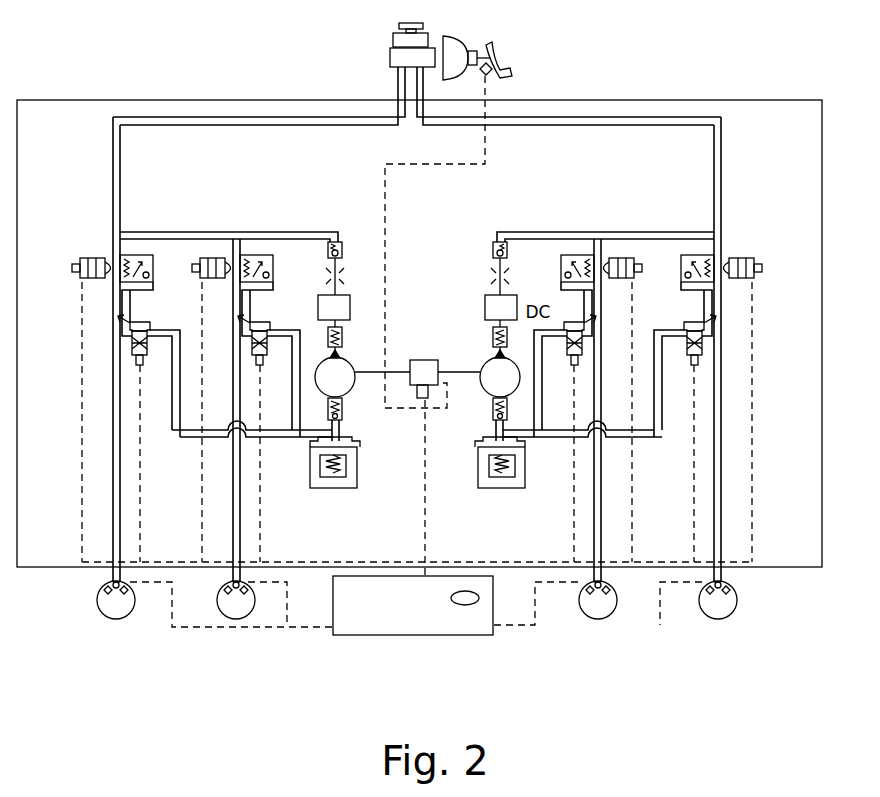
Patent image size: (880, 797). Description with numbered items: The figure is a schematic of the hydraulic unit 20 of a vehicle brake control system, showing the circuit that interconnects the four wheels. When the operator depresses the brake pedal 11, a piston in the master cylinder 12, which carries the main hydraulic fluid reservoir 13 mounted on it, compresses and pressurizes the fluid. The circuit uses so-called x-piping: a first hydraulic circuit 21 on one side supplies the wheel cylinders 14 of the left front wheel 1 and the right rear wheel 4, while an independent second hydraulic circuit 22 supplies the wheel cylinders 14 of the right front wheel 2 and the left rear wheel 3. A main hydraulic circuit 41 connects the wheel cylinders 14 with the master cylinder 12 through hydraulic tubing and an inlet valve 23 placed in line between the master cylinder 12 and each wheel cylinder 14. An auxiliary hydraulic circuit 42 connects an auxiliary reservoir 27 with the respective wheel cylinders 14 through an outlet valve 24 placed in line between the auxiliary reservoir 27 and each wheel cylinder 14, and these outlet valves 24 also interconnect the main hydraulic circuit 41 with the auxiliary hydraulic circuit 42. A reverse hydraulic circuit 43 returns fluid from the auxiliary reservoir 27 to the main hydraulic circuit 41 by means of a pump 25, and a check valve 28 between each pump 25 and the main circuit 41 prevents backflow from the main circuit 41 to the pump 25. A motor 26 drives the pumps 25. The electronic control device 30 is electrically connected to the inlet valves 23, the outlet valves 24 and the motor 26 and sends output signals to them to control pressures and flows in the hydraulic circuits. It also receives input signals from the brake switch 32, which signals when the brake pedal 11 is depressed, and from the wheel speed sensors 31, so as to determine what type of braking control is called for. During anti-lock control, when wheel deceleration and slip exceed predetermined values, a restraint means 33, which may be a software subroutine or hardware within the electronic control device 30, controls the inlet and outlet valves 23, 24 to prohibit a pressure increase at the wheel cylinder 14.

The left front wheel 1 is at (130, 612).
The right front wheel 2 is at (730, 610).
The left rear wheel 3 is at (609, 608).
The right rear wheel 4 is at (252, 612).
The brake pedal 11 is at (510, 44).
The master cylinder 12 is at (390, 62).
The main hydraulic fluid reservoir 13 is at (393, 40).
The wheel cylinder 14 is at (744, 590).
The hydraulic unit 20 is at (768, 98).
The first hydraulic circuit 21 is at (130, 116).
The second hydraulic circuit 22 is at (555, 117).
The inlet valve 23 is at (740, 258).
The outlet valve 24 is at (838, 364).
The pump 25 is at (484, 368).
The motor 26 is at (422, 360).
The auxiliary reservoir 27 is at (500, 490).
The check valve 28 is at (492, 243).
The electronic control device 30 is at (378, 636).
The wheel speed sensor 31 is at (716, 578).
The brake switch 32 is at (502, 72).
The restraint means 33 is at (464, 606).
The main hydraulic circuit 41 is at (721, 150).
The auxiliary hydraulic circuit 42 is at (658, 438).
The reverse hydraulic circuit 43 is at (509, 282).